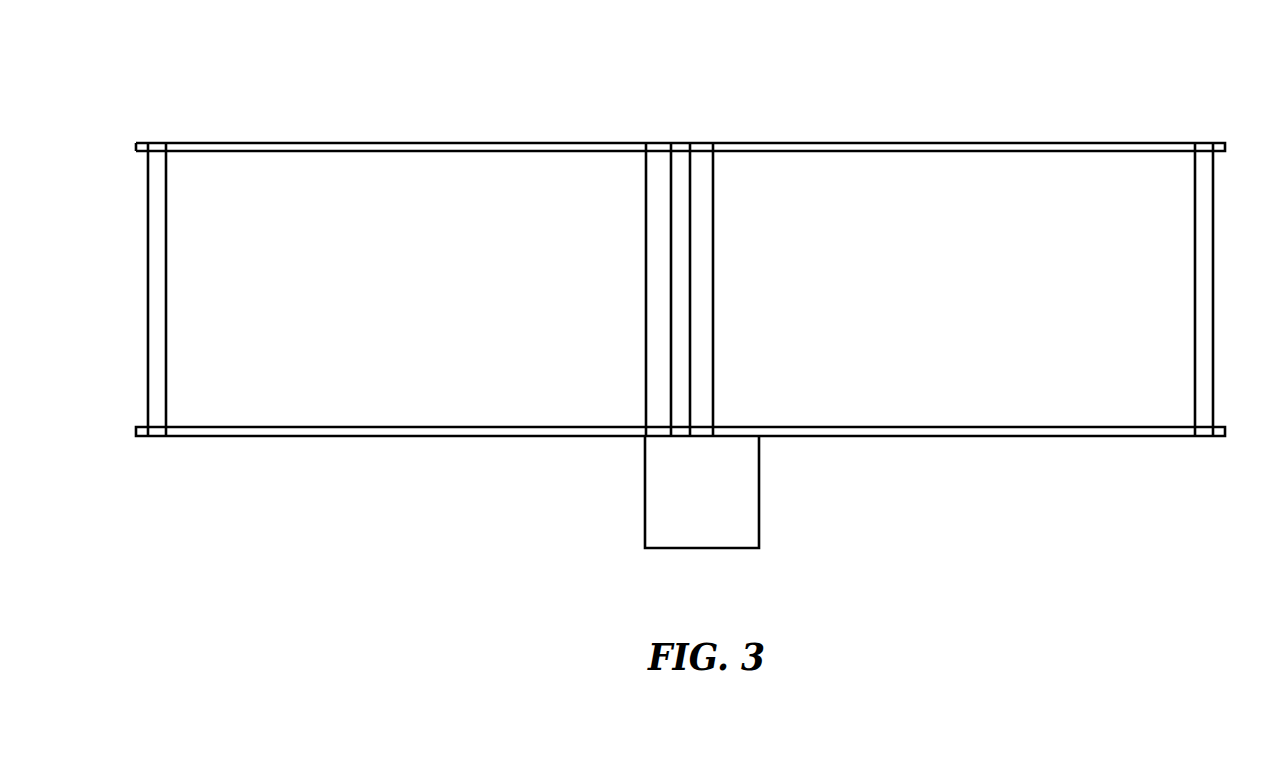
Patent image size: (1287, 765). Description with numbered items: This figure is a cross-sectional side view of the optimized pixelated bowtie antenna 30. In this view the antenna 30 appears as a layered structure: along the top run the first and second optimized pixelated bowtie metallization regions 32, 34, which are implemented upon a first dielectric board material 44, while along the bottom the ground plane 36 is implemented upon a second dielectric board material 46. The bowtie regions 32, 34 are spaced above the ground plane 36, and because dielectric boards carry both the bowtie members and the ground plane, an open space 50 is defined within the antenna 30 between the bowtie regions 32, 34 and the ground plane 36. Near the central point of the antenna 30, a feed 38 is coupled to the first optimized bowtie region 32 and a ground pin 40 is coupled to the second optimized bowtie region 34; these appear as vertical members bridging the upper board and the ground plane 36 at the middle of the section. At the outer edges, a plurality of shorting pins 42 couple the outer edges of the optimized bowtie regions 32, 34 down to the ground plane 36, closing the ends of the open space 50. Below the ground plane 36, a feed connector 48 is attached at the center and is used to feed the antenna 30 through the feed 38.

The optimized pixelated bowtie antenna 30 is at (250, 88).
The first optimized pixelated bowtie metallization region 32 is at (383, 142).
The second optimized pixelated bowtie metallization region 34 is at (965, 142).
The ground plane 36 is at (488, 427).
The feed 38 is at (702, 270).
The ground pin 40 is at (655, 266).
The shorting pins 42 is at (167, 255).
The first dielectric board material 44 is at (370, 152).
The second dielectric board material 46 is at (952, 437).
The feed connector 48 is at (670, 510).
The open space 50 is at (393, 337).